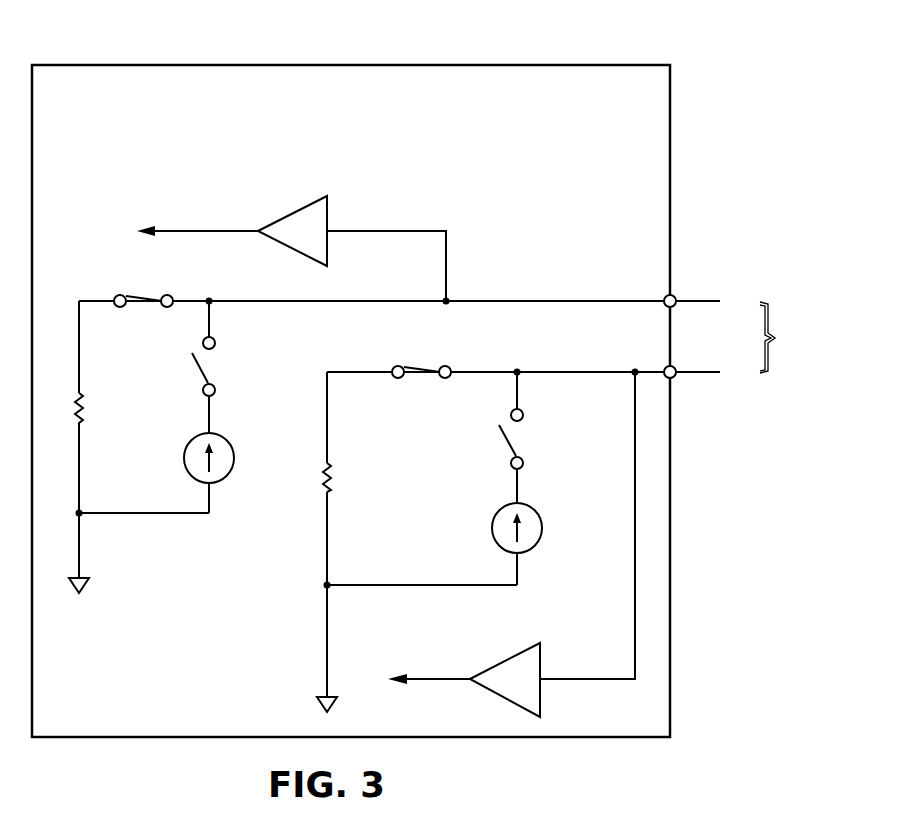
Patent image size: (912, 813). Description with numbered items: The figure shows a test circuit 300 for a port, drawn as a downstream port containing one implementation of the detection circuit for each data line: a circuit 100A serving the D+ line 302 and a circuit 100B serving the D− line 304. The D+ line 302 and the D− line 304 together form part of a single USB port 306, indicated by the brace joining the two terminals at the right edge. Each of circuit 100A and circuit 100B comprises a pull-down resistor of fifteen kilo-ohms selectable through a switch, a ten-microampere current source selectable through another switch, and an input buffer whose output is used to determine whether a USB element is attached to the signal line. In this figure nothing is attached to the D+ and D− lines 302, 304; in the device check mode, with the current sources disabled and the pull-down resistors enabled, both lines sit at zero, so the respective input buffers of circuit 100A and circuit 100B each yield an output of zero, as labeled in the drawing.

The test circuit 300 is at (191, 58).
The circuit 100A is at (168, 187).
The circuit 100B is at (467, 561).
The D+ line 302 is at (697, 300).
The D− line 304 is at (697, 373).
The USB port 306 is at (794, 337).